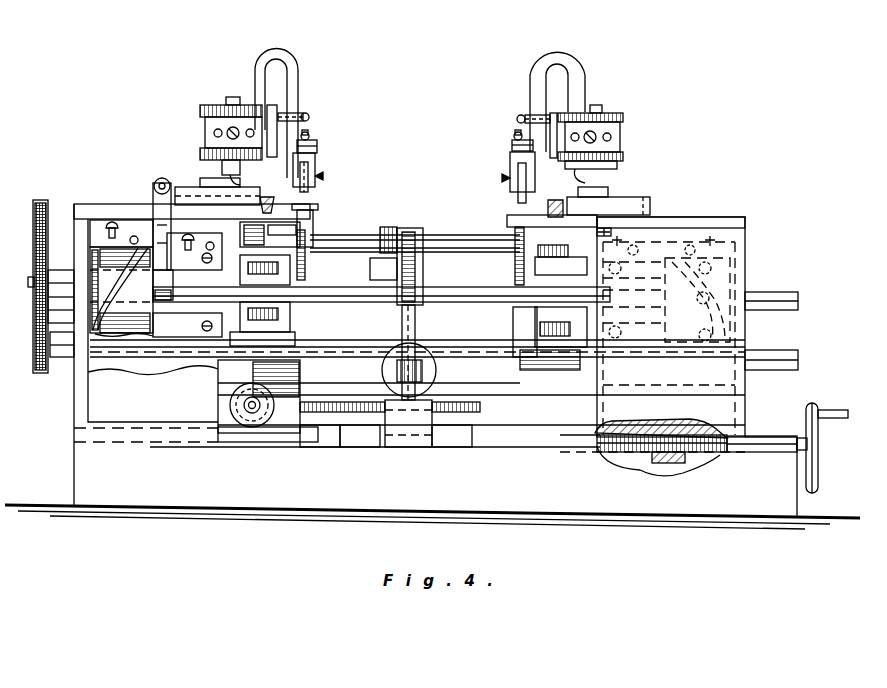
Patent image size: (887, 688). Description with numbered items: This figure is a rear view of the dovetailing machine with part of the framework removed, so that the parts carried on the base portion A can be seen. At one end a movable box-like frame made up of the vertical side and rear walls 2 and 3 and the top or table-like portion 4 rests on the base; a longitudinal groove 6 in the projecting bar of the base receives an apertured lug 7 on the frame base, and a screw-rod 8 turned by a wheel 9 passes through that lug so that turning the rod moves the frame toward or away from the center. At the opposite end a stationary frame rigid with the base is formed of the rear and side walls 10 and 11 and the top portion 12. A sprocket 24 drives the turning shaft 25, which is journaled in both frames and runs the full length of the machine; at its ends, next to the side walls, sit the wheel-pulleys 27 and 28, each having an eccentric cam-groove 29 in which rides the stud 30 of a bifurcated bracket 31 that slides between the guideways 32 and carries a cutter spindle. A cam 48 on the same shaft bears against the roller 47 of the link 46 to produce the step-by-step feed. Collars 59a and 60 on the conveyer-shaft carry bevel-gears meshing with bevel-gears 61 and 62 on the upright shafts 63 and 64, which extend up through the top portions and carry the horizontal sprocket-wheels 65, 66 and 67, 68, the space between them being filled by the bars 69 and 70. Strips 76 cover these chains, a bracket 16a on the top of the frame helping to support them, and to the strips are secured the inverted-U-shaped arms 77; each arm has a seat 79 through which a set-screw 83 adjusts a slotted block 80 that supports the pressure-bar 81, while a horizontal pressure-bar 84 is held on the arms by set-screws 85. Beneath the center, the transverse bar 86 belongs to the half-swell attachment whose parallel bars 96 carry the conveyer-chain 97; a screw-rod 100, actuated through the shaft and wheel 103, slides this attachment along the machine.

The vertical side wall 2 is at (745, 262).
The vertical rear wall 3 is at (718, 406).
The top or table-like portion 4 is at (705, 222).
The longitudinal groove 6 is at (604, 445).
The apertured projection or lug 7 is at (655, 458).
The screw-rod 8 is at (718, 452).
The wheel 9 is at (820, 466).
The vertical rear wall 10 is at (98, 400).
The vertical side wall 11 is at (72, 385).
The top portion 12 is at (86, 205).
The bracket 16a is at (608, 200).
The sprocket 24 is at (33, 220).
The turning shaft 25 is at (340, 285).
The wheel-pulley 27 is at (124, 248).
The wheel-pulley 28 is at (715, 280).
The cam-groove 29 is at (113, 328).
The pintle or stud 30 is at (112, 278).
The bifurcated bracket or arm 31 is at (193, 305).
The guideways or bars 32 is at (187, 285).
The link or rod 46 is at (160, 222).
The roller 47 is at (150, 238).
The cam 48 is at (172, 285).
The collar 59a is at (604, 232).
The collar 60 is at (313, 222).
The bevel-gear 61 is at (576, 217).
The bevel-gear 62 is at (248, 212).
The upright shaft 63 is at (585, 180).
The upright shaft 64 is at (222, 168).
The sprocket-wheel 65 is at (200, 153).
The sprocket-wheel 66 is at (212, 105).
The sprocket-wheel 67 is at (612, 113).
The sprocket-wheel 68 is at (623, 154).
The horizontally-disposed bar 69 is at (205, 130).
The horizontally-disposed bar 70 is at (620, 132).
The strip 76 is at (245, 206).
The inverted-U-shaped arm 77 is at (250, 85).
The seat or extension 79 is at (318, 146).
The block 80 is at (316, 160).
The pressure-bar 81 is at (310, 186).
The set-screw 83 is at (308, 136).
The pressure-bar 84 is at (272, 108).
The set-screw 85 is at (303, 115).
The bar 86 is at (410, 440).
The parallel bars 96 is at (428, 262).
The conveyer-chain 97 is at (412, 240).
The screw-rod 100 is at (326, 402).
The shaft and wheel 103 is at (228, 406).
The base portion A is at (72, 448).